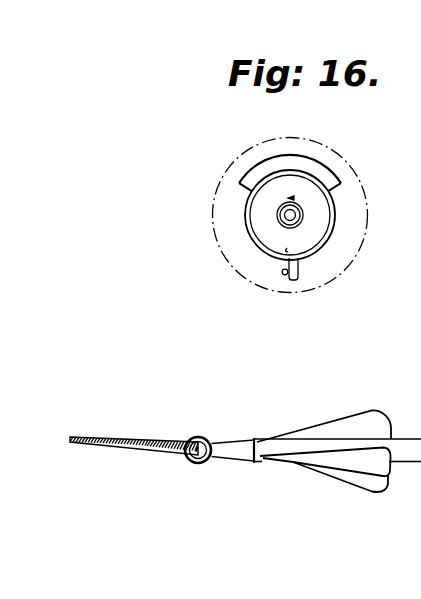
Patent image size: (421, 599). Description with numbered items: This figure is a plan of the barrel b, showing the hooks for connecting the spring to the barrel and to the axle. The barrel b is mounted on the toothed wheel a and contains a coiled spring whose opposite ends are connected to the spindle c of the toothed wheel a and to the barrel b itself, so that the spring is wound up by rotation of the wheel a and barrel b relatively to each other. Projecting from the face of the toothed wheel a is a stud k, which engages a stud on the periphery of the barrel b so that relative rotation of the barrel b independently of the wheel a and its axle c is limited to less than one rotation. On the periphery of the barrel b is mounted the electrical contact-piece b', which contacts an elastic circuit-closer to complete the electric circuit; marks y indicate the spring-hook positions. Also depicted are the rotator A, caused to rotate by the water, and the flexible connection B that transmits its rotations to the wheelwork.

The toothed wheel a is at (370, 197).
The barrel b is at (252, 215).
The electrical contact-piece b' is at (305, 160).
The stud k is at (284, 277).
The spindle c is at (302, 238).
The section marks y is at (297, 198).
The rotator A is at (318, 424).
The flexible connection B is at (92, 436).